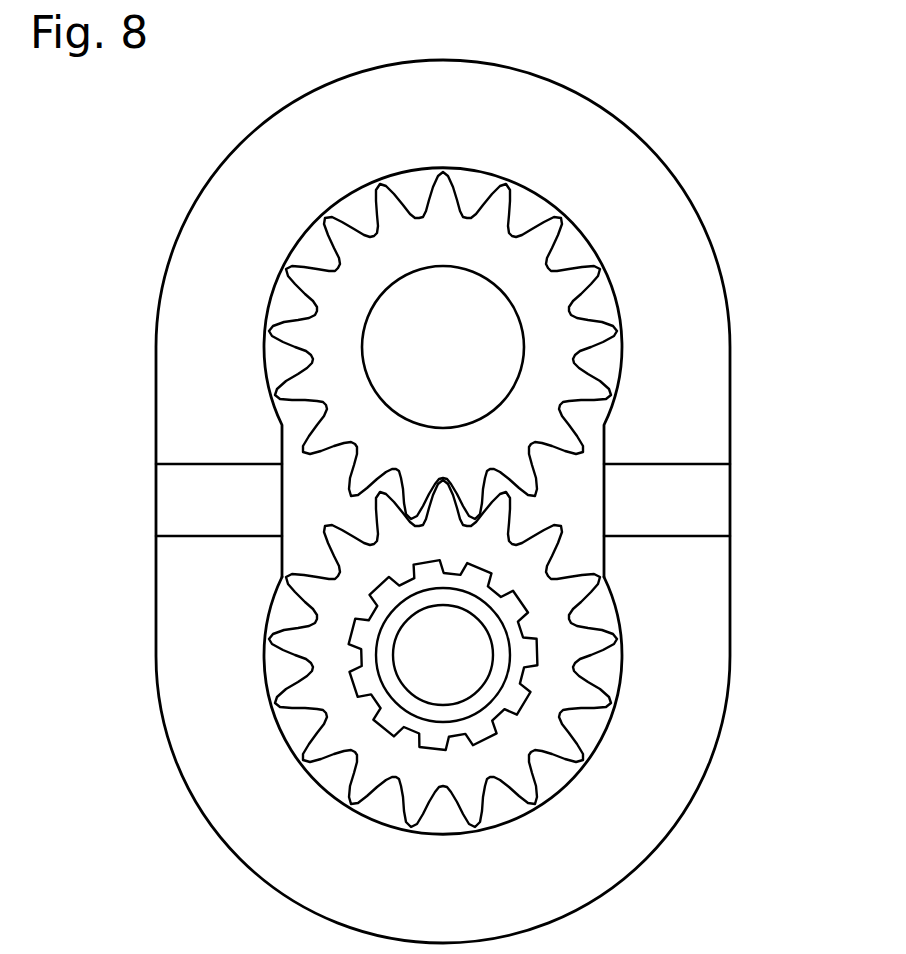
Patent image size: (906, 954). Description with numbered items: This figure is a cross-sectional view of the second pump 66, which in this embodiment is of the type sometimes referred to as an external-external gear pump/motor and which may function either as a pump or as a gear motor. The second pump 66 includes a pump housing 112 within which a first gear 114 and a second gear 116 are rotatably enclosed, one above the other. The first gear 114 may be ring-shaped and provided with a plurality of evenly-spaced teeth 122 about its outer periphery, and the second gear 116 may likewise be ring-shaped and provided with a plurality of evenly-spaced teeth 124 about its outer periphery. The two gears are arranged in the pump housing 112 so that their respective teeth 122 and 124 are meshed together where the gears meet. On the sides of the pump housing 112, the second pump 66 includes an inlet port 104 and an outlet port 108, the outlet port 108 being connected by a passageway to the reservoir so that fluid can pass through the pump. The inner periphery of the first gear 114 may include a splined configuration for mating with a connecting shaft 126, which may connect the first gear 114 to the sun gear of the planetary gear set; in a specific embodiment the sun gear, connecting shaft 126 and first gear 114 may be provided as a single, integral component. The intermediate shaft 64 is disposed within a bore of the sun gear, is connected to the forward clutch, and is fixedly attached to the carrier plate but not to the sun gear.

The second pump 66 is at (738, 83).
The pump housing 112 is at (320, 897).
The teeth 124 is at (580, 278).
The teeth 122 is at (295, 635).
The inlet port 104 is at (227, 497).
The outlet port 108 is at (667, 503).
The second gear 116 is at (347, 290).
The first gear 114 is at (355, 727).
The connecting shaft 126 is at (407, 724).
The intermediate shaft 64 is at (455, 670).